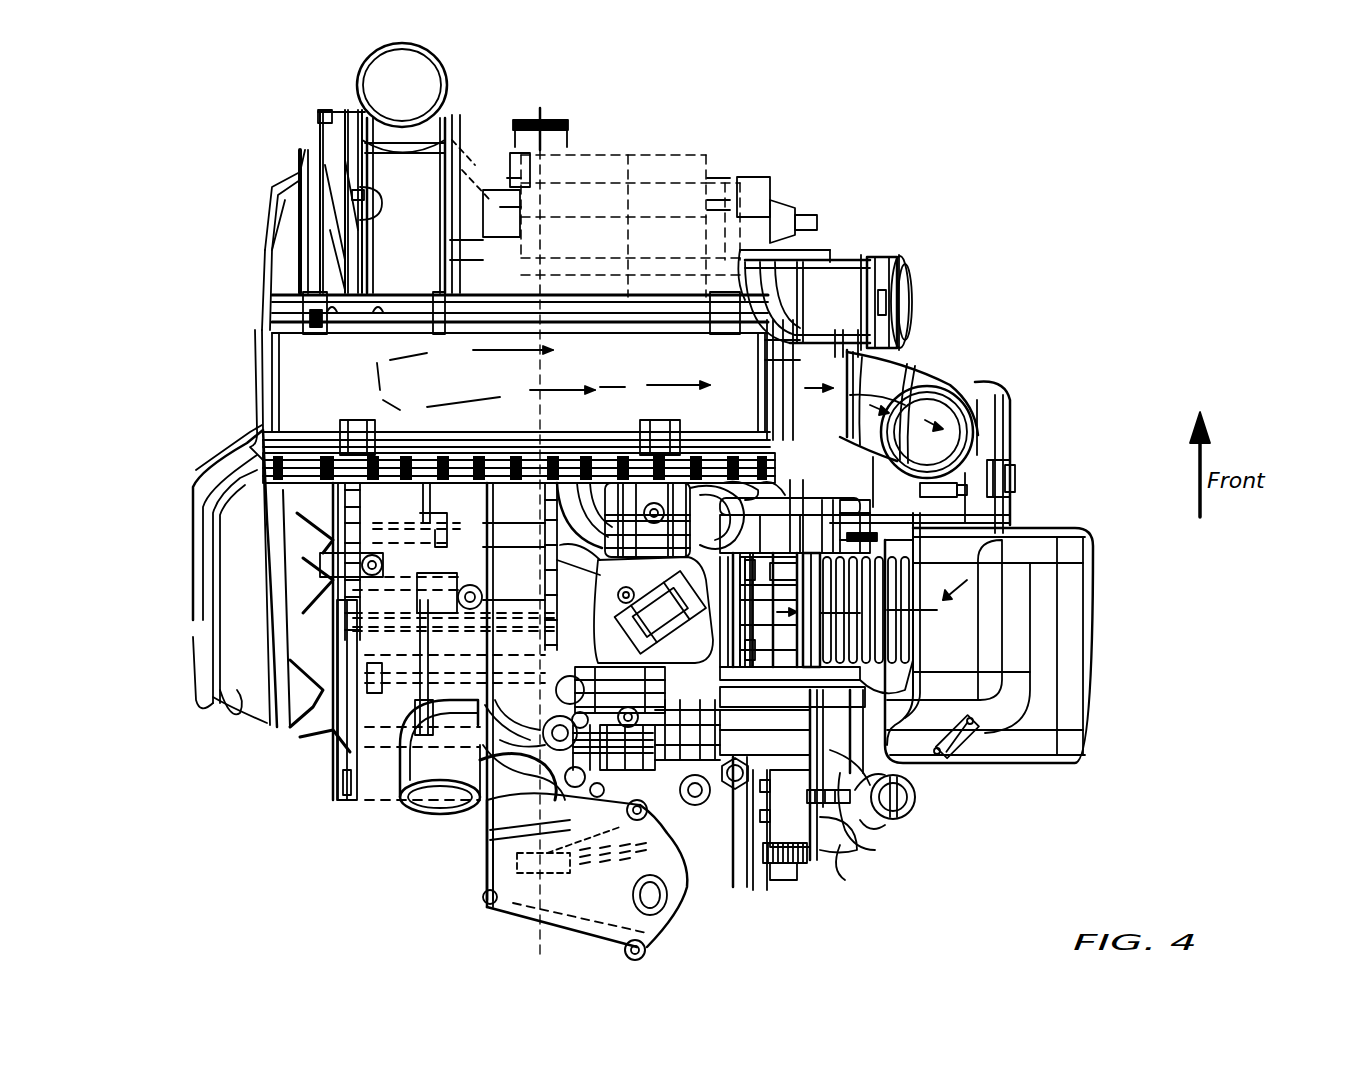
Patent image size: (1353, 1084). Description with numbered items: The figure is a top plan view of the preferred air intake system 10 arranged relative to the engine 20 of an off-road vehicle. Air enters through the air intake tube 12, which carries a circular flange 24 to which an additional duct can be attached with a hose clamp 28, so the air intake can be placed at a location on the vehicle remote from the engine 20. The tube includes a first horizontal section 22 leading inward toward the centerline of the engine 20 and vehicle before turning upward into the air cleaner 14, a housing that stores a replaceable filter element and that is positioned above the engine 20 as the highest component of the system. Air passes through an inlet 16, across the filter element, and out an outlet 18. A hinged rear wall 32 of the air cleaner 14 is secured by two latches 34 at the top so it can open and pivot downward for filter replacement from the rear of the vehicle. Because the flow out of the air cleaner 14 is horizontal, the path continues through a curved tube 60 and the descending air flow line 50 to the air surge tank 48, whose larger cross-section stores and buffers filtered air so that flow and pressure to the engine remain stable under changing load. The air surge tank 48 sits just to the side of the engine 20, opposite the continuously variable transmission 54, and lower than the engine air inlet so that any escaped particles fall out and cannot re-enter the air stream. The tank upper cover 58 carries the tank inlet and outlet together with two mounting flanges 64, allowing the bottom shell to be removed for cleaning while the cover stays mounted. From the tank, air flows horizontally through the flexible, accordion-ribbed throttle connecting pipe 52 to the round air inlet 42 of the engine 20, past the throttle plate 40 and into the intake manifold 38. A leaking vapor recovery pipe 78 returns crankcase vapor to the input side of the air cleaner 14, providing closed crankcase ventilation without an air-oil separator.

The air intake system 10 is at (583, 627).
The air intake tube 12 is at (805, 345).
The air cleaner 14 is at (623, 362).
The inlet 16 is at (775, 195).
The outlet 18 is at (798, 352).
The engine 20 is at (447, 585).
The first horizontal section 22 is at (856, 324).
The circular flange 24 is at (897, 267).
The hose clamp 28 is at (883, 262).
The rear wall 32 is at (280, 483).
The latches 34 is at (337, 453).
The intake manifold 38 is at (473, 810).
The throttle plate 40 is at (818, 685).
The round air inlet 42 is at (867, 810).
The air surge tank 48 is at (1043, 722).
The descending air flow line 50 is at (987, 380).
The throttle connecting pipe 52 is at (900, 703).
The continuously variable transmission 54 is at (237, 690).
The tank upper cover 58 is at (1040, 547).
The curved tube 60 is at (923, 403).
The mounting brackets or flanges 64 is at (1010, 477).
The leaking vapor recovery pipe 78 is at (467, 455).